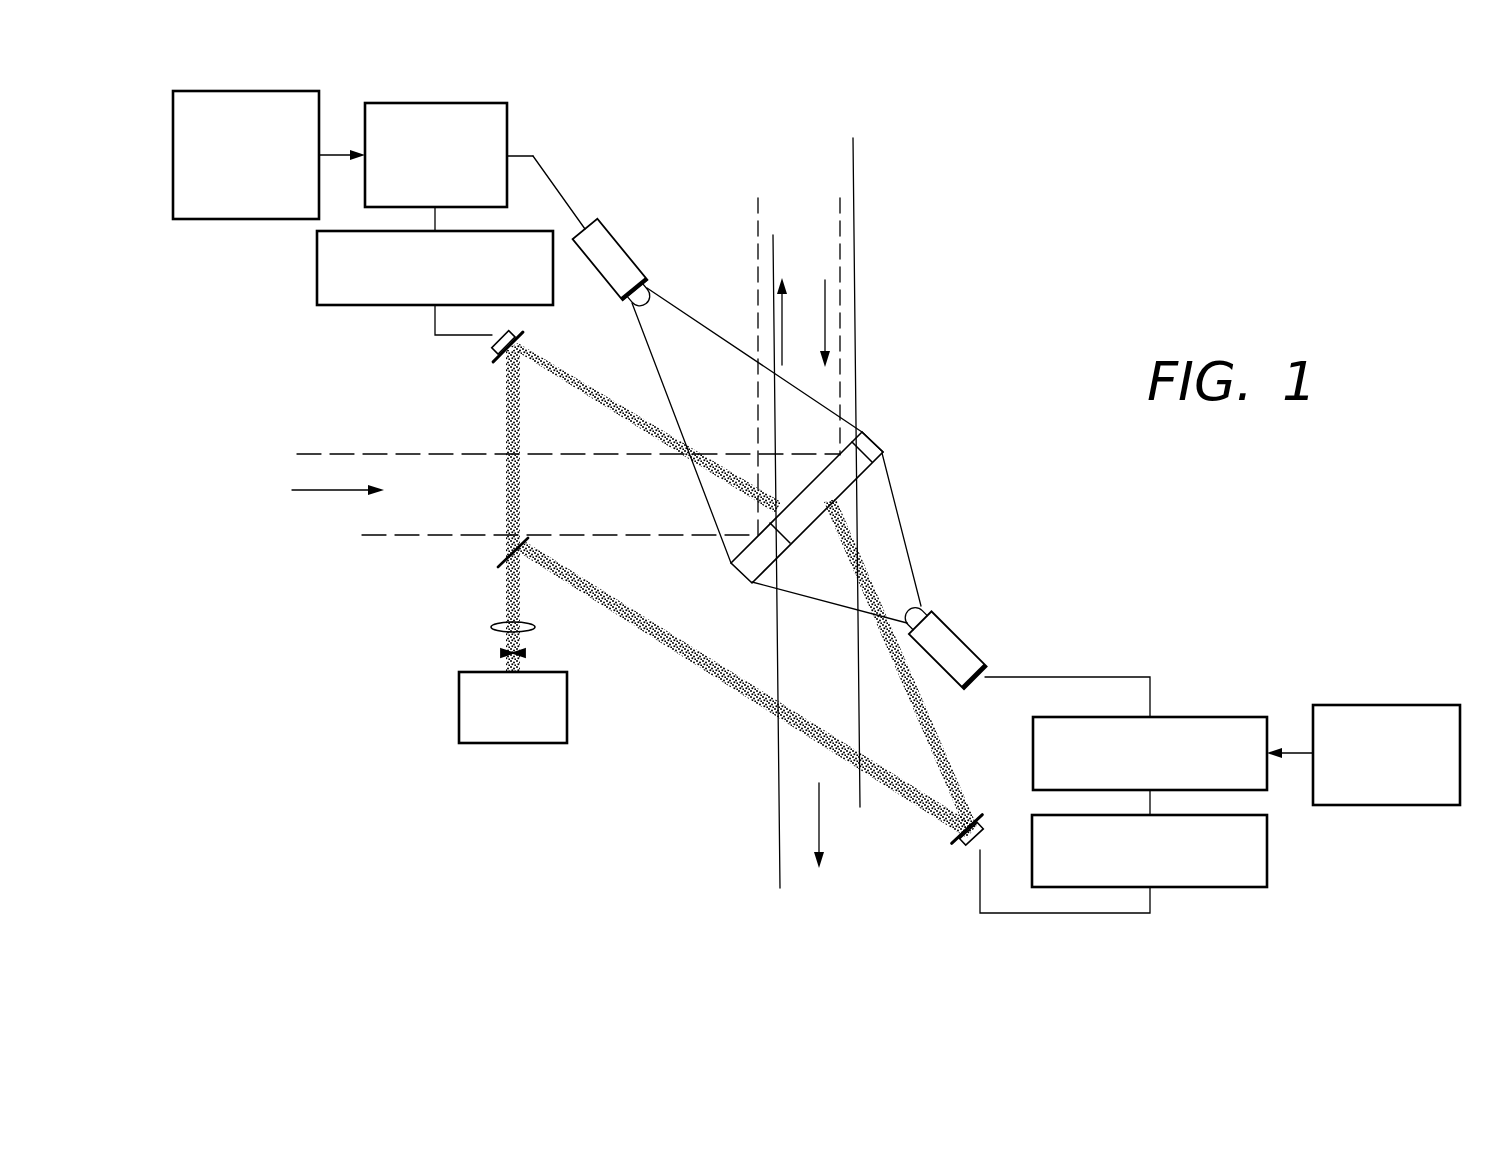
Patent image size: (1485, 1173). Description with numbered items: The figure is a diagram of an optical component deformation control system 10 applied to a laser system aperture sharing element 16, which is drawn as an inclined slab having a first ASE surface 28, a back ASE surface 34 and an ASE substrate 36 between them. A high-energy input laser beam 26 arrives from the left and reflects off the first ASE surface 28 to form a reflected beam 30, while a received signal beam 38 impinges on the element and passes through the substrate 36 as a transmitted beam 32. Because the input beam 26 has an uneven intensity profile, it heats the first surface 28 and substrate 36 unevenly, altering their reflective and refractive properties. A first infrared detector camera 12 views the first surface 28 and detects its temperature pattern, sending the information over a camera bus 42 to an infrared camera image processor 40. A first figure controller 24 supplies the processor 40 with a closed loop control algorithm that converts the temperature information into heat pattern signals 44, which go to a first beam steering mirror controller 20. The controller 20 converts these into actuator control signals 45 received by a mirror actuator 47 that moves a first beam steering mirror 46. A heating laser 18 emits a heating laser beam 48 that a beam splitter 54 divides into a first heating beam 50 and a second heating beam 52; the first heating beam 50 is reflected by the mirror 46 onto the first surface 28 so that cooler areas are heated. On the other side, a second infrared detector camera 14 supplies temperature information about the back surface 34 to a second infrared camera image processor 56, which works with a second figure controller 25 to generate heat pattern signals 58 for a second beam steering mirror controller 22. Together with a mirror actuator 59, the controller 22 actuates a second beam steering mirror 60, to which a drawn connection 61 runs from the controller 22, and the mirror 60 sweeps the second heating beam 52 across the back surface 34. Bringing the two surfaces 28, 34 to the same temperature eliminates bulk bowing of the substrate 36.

The optical component deformation control system 10 is at (990, 220).
The first infrared detector camera 12 is at (627, 250).
The second infrared detector camera 14 is at (965, 620).
The aperture sharing element 16 is at (890, 430).
The heating laser 18 is at (510, 744).
The first beam steering mirror controller 20 is at (353, 306).
The second beam steering mirror controller 22 is at (1190, 888).
The first figure controller 24 is at (223, 220).
The second figure controller 25 is at (1380, 704).
The high-energy input laser beam 26 is at (313, 493).
The first ASE surface 28 is at (733, 552).
The reflected beam 30 is at (782, 322).
The transmitted beam 32 is at (818, 817).
The back ASE surface 34 is at (767, 575).
The ASE substrate 36 is at (874, 466).
The received signal beam 38 is at (827, 316).
The infrared camera image processor 40 is at (508, 127).
The camera bus 42 is at (533, 156).
The heat pattern signals 44 is at (437, 225).
The actuator control signals 45 is at (447, 335).
The first beam steering mirror 46 is at (513, 343).
The mirror actuator 47 is at (516, 334).
The heating laser beam 48 is at (508, 595).
The first heating beam 50 is at (512, 398).
The second heating beam 52 is at (678, 668).
The beam splitter 54 is at (530, 545).
The second infrared camera image processor 56 is at (1195, 716).
The heat pattern signals 58 is at (1153, 800).
The mirror actuator 59 is at (980, 826).
The second beam steering mirror 60 is at (970, 820).
The controller to mirror connection 61 is at (1000, 913).